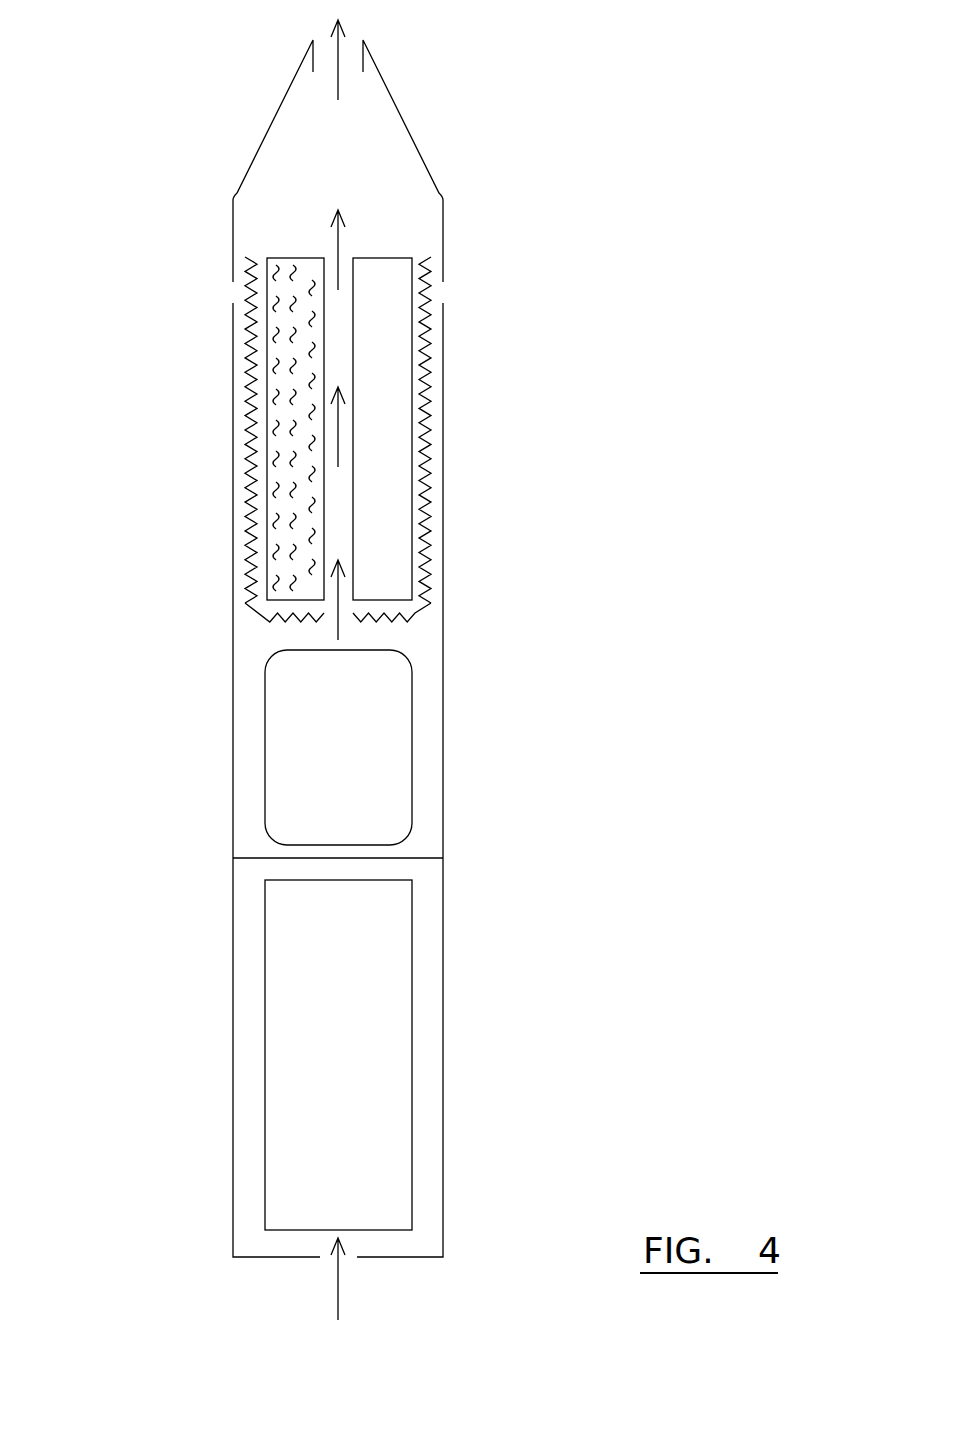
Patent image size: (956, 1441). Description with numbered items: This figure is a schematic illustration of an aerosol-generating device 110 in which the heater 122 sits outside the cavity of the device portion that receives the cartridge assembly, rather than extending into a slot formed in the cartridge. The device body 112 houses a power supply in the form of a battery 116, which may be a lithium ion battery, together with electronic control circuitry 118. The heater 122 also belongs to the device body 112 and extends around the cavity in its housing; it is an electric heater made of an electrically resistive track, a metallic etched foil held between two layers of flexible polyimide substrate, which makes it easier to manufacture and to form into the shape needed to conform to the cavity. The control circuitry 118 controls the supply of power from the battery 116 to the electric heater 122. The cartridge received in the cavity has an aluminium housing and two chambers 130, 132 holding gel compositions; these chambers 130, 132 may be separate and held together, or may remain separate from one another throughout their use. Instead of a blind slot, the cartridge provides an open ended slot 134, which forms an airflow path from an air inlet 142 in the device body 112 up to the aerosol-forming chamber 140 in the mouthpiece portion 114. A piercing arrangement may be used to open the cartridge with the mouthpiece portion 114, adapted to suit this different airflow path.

The aerosol-generating device 110 is at (220, 829).
The device body 112 is at (444, 718).
The mouthpiece portion 114 is at (239, 179).
The battery 116 is at (412, 1055).
The electronic control circuitry 118 is at (267, 742).
The heater 122 is at (248, 362).
The chamber 130 is at (392, 375).
The chamber 132 is at (278, 436).
The open ended slot 134 is at (340, 513).
The aerosol-forming chamber 140 is at (306, 149).
The air inlet 142 is at (347, 1260).